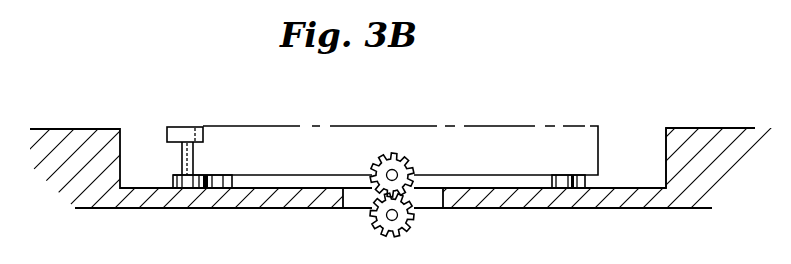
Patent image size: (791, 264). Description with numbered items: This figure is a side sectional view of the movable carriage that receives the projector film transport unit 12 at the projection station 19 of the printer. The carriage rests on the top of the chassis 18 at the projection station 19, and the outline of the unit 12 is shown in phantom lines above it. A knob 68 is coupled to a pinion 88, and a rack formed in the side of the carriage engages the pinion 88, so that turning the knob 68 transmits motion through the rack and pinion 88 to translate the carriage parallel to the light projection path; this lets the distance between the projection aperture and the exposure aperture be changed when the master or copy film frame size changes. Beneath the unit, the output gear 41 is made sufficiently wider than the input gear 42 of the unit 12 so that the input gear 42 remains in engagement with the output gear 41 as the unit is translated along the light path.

The projector film transport unit 12 is at (405, 125).
The chassis 18 is at (742, 100).
The projection station 19 is at (644, 161).
The output gear 41 is at (413, 223).
The input gear 42 is at (372, 166).
The knob 68 is at (177, 127).
The pinion 88 is at (172, 176).